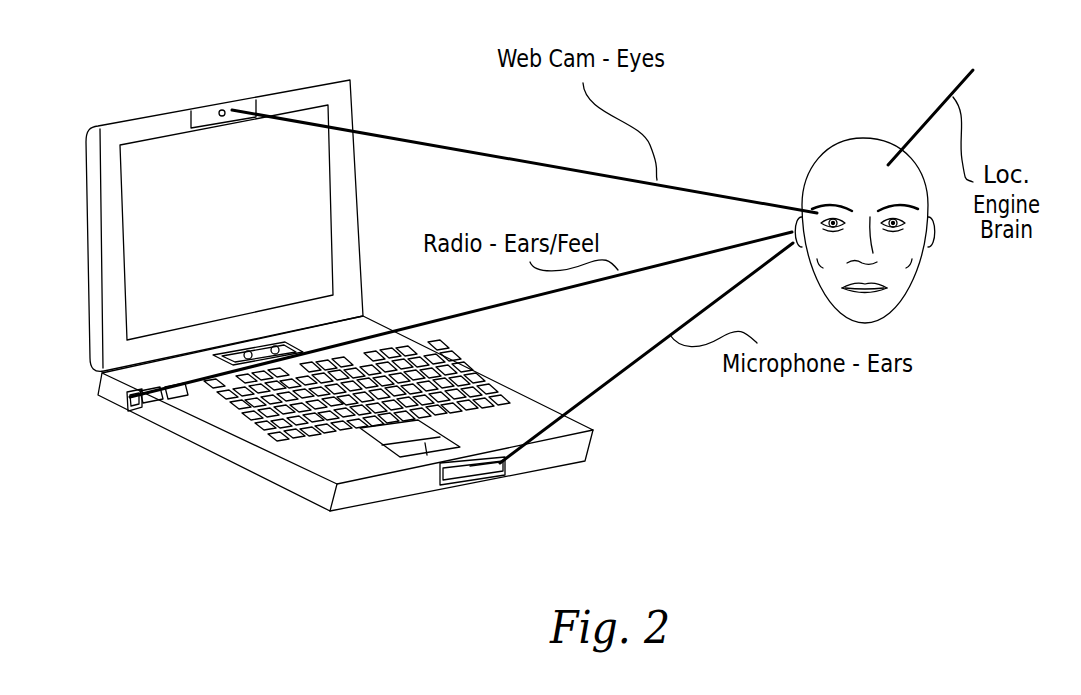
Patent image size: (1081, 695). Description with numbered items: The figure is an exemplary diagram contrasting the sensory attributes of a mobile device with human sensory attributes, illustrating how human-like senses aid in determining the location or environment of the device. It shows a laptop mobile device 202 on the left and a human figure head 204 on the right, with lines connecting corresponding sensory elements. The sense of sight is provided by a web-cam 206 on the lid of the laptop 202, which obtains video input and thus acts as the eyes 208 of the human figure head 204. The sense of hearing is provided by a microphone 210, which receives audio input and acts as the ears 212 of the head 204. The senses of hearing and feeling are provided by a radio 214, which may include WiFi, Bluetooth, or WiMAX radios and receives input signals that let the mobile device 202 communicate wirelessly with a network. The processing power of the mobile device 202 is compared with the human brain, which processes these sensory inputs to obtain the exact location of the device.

The laptop mobile device 202 is at (336, 277).
The human figure head 204 is at (855, 138).
The web-cam 206 is at (222, 105).
The eyes 208 is at (827, 208).
The microphone 210 is at (500, 477).
The ears 212 is at (797, 217).
The radio 214 is at (128, 411).